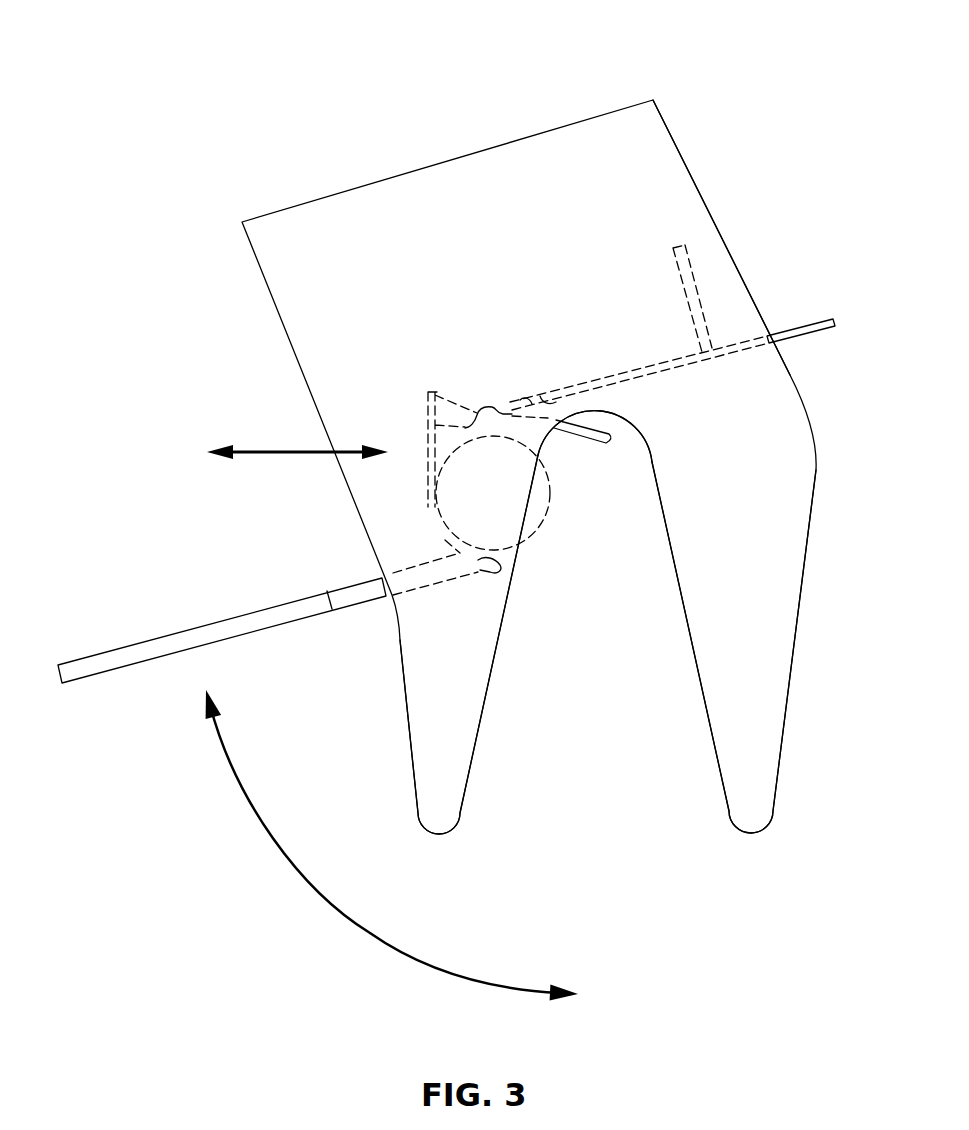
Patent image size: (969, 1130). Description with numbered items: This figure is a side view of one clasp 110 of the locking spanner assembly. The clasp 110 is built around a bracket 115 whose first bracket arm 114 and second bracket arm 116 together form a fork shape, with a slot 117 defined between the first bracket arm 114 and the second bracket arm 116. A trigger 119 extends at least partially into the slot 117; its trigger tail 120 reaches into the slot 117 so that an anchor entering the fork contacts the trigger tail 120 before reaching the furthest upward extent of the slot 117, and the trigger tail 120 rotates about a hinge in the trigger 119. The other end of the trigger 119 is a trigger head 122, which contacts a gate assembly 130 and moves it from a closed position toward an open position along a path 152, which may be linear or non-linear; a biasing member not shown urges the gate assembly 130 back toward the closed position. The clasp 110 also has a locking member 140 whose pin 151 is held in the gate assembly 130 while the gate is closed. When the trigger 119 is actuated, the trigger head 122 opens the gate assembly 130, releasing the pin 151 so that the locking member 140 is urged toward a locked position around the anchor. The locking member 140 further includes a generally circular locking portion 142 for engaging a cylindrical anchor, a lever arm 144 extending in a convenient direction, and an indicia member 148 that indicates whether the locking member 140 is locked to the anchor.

The clasp 110 is at (695, 68).
The first bracket arm 114 is at (777, 633).
The bracket 115 is at (672, 195).
The second bracket arm 116 is at (433, 680).
The slot 117 is at (615, 600).
The trigger 119 is at (586, 442).
The trigger tail 120 is at (612, 444).
The trigger head 122 is at (493, 408).
The gate assembly 130 is at (410, 390).
The locking member 140 is at (418, 533).
The locking portion 142 is at (483, 562).
The lever arm 144 is at (162, 648).
The indicia member 148 is at (808, 328).
The pin 151 is at (462, 448).
The path 152 is at (270, 450).